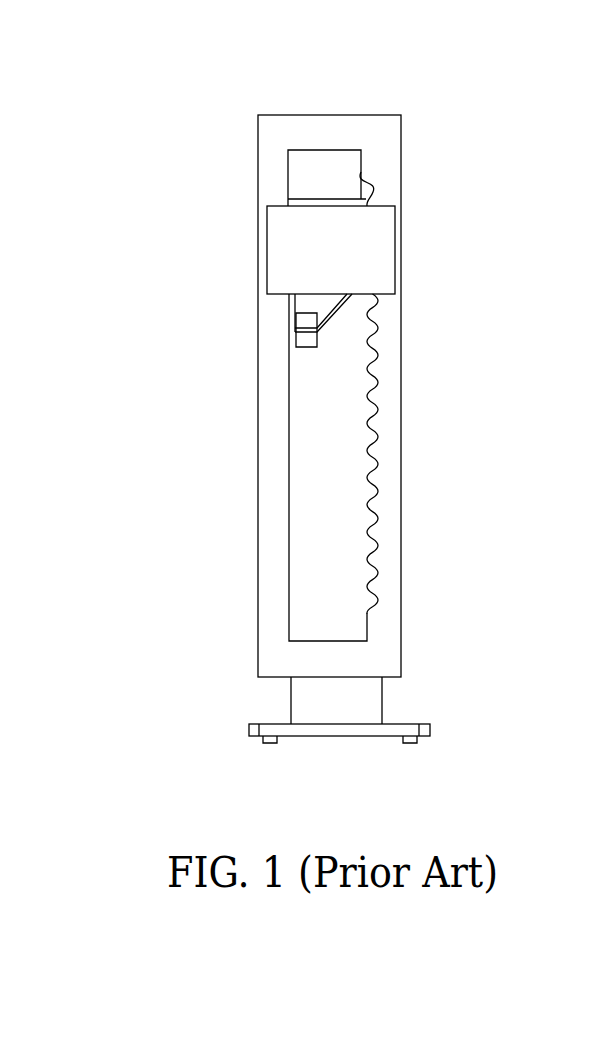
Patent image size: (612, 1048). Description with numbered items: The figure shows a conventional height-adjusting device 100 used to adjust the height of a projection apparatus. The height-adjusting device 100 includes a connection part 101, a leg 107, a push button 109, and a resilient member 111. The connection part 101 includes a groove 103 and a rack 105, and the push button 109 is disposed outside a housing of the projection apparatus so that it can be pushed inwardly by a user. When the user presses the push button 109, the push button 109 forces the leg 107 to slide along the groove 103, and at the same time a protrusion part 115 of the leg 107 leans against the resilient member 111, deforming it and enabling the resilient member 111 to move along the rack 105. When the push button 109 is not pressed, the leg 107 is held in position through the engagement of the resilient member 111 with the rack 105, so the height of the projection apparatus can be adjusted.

The height-adjusting device 100 is at (63, 36).
The connection part 101 is at (268, 148).
The groove 103 is at (345, 177).
The rack 105 is at (372, 448).
The leg 107 is at (315, 585).
The push button 109 is at (277, 252).
The resilient member 111 is at (295, 322).
The protrusion part 115 is at (304, 340).